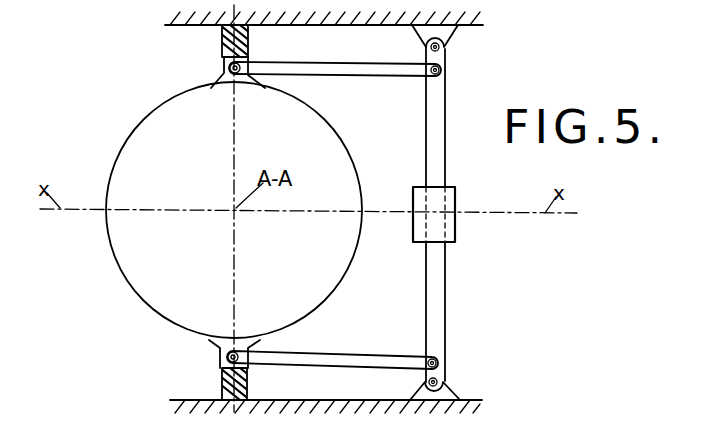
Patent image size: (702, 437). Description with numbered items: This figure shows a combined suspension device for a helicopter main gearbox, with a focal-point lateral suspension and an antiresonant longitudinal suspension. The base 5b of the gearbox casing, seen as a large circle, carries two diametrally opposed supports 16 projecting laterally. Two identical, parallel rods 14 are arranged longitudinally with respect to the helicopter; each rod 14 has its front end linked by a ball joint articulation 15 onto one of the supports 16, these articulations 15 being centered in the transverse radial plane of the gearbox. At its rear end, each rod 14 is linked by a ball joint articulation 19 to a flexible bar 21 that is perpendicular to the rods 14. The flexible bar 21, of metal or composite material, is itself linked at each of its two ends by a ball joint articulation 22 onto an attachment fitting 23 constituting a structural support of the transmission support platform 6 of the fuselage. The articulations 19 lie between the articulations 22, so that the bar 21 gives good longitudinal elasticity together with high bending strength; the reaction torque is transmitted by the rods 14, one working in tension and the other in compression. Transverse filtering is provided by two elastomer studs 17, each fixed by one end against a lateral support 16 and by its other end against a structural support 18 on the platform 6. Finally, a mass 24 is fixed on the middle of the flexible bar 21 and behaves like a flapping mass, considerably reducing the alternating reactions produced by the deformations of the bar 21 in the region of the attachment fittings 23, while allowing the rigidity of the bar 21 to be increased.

The base of the box 5b is at (124, 261).
The transmission support platform 6 is at (478, 28).
The rod 14 is at (332, 68).
The ball joint articulation 15 is at (237, 75).
The support 16 is at (219, 72).
The elastomer stud 17 is at (222, 44).
The structural support 18 is at (172, 22).
The ball joint articulation 19 is at (430, 75).
The flexible bar 21 is at (434, 148).
The ball joint articulation 22 is at (446, 50).
The attachment fitting 23 is at (421, 36).
The mass 24 is at (454, 200).